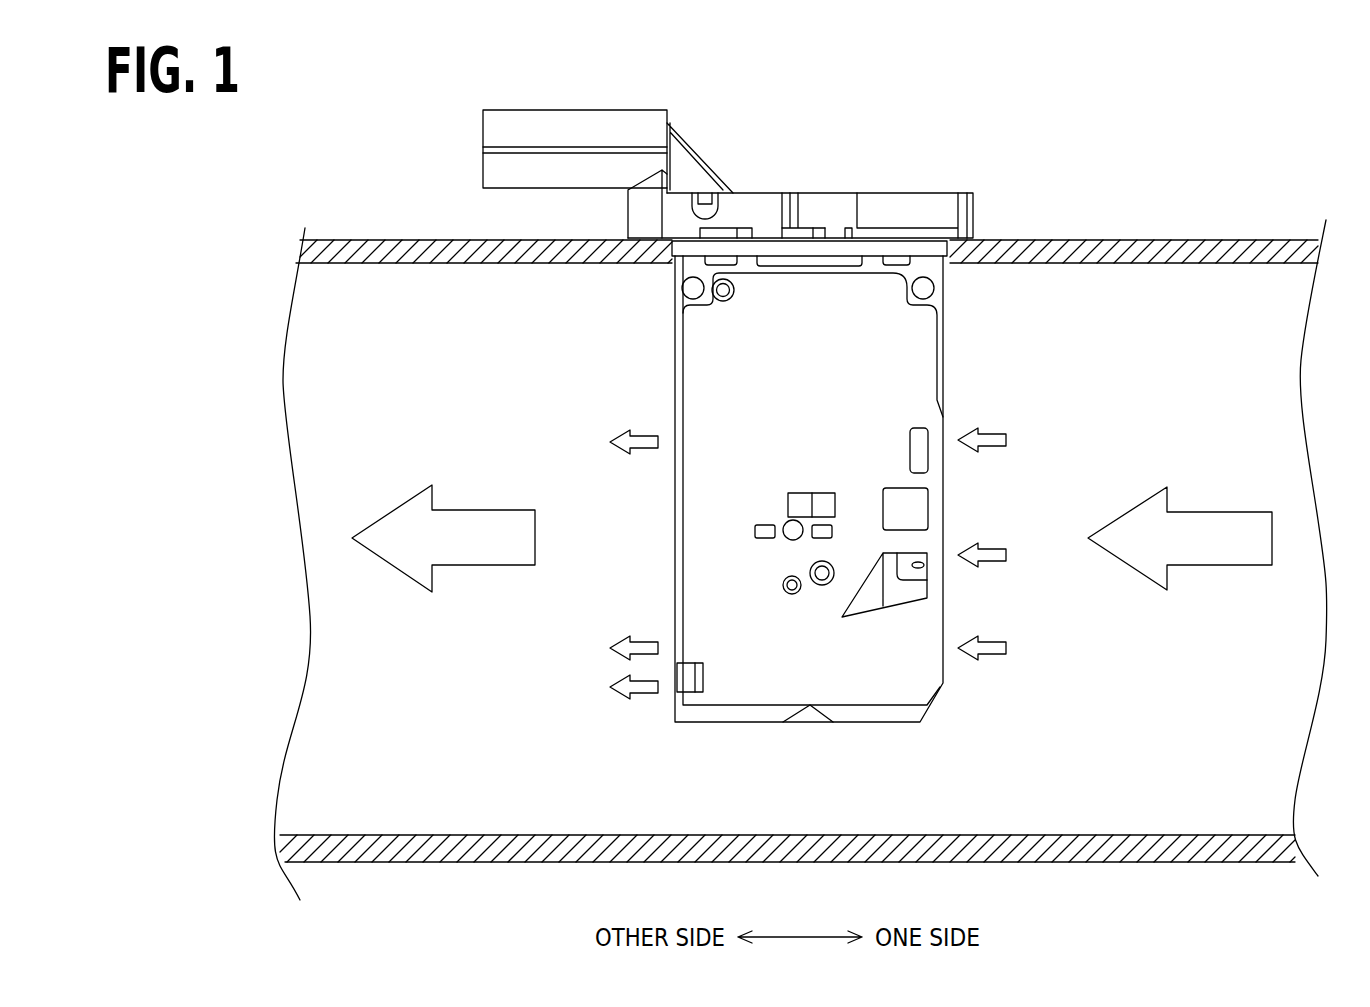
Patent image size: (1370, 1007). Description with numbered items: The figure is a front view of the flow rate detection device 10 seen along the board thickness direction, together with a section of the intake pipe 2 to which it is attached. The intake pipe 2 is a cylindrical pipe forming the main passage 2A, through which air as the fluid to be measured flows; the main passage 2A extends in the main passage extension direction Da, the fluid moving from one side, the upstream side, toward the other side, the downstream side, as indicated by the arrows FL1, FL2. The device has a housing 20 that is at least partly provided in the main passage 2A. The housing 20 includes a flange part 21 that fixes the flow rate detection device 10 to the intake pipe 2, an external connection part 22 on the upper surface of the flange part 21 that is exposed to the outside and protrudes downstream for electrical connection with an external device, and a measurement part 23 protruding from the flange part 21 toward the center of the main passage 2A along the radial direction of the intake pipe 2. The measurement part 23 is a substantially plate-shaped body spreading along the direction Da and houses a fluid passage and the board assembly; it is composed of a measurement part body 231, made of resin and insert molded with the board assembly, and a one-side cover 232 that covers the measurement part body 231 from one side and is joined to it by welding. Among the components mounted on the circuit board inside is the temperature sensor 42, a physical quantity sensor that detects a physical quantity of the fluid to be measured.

The intake pipe 2 is at (370, 236).
The main passage 2A is at (389, 811).
The flow rate detection device 10 is at (827, 108).
The housing 20 is at (800, 176).
The flange part 21 is at (878, 205).
The external connection part 22 is at (533, 128).
The measurement part 23 is at (933, 445).
The measurement part body 231 is at (932, 303).
The one-side cover 232 is at (913, 375).
The temperature sensor 42 is at (922, 566).
The arrow indicating flow of fluid FL1 is at (1222, 512).
The arrow indicating flow of fluid FL2 is at (478, 510).
The main passage extension direction Da is at (805, 936).